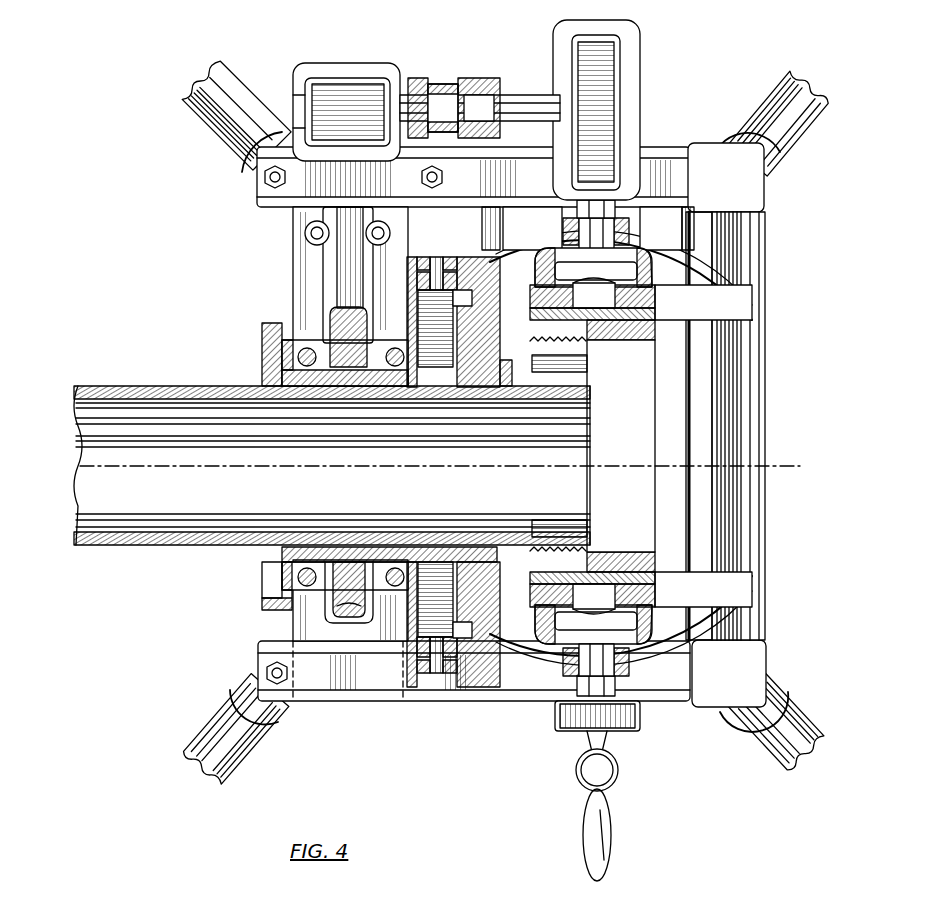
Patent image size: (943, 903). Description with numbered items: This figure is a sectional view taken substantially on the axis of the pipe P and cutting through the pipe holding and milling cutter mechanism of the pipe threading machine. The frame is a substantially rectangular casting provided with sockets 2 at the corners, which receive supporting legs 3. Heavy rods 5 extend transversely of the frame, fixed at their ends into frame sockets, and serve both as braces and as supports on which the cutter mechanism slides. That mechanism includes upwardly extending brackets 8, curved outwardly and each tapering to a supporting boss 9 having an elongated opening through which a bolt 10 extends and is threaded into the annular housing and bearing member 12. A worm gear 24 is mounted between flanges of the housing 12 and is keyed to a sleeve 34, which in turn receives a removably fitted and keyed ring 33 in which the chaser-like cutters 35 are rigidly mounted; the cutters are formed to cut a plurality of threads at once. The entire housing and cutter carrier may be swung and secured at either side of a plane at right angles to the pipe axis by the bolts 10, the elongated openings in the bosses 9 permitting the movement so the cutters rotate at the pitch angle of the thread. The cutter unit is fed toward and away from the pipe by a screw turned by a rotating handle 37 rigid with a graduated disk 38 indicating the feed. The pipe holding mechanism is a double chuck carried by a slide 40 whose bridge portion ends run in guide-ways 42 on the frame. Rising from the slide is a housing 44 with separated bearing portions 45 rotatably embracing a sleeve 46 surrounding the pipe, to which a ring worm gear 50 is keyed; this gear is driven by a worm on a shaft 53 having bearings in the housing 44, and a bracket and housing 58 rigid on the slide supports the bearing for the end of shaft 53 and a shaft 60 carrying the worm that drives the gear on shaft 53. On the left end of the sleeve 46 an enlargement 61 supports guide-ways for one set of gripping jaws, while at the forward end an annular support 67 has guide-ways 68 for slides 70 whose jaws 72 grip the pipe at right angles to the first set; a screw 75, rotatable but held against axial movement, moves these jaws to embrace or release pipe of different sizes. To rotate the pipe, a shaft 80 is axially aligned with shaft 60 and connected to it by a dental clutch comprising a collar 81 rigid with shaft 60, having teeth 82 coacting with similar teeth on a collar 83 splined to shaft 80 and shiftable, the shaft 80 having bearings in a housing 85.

The pipe P is at (146, 544).
The sockets 2 is at (250, 180).
The supporting legs 3 is at (212, 128).
The heavy rods 5 is at (562, 218).
The brackets 8 is at (680, 270).
The supporting boss 9 is at (630, 670).
The bolt 10 is at (616, 214).
The annular housing and bearing member 12 is at (660, 298).
The worm gear 24 is at (593, 446).
The ring 33 is at (608, 346).
The sleeve 34 is at (528, 338).
The cutters 35 is at (582, 368).
The rotating handle 37 is at (587, 778).
The graduated disk 38 is at (562, 720).
The slide 40 is at (238, 636).
The guide-ways 42 is at (278, 207).
The housing 44 is at (331, 630).
The bearing portions 45 is at (282, 592).
The sleeve 46 is at (282, 555).
The ring worm gear 50 is at (330, 296).
The shaft 53 is at (335, 270).
The bracket and housing 58 is at (375, 188).
The shaft 60 is at (408, 88).
The enlargement 61 is at (262, 330).
The annular support 67 is at (472, 300).
The guide-ways 68 is at (415, 258).
The slides 70 is at (472, 293).
The jaws 72 is at (516, 374).
The screw 75 is at (428, 254).
The shaft 80 is at (532, 97).
The collar 81 is at (425, 82).
The teeth 82 is at (460, 82).
The collar 83 is at (500, 82).
The housing 85 is at (610, 70).